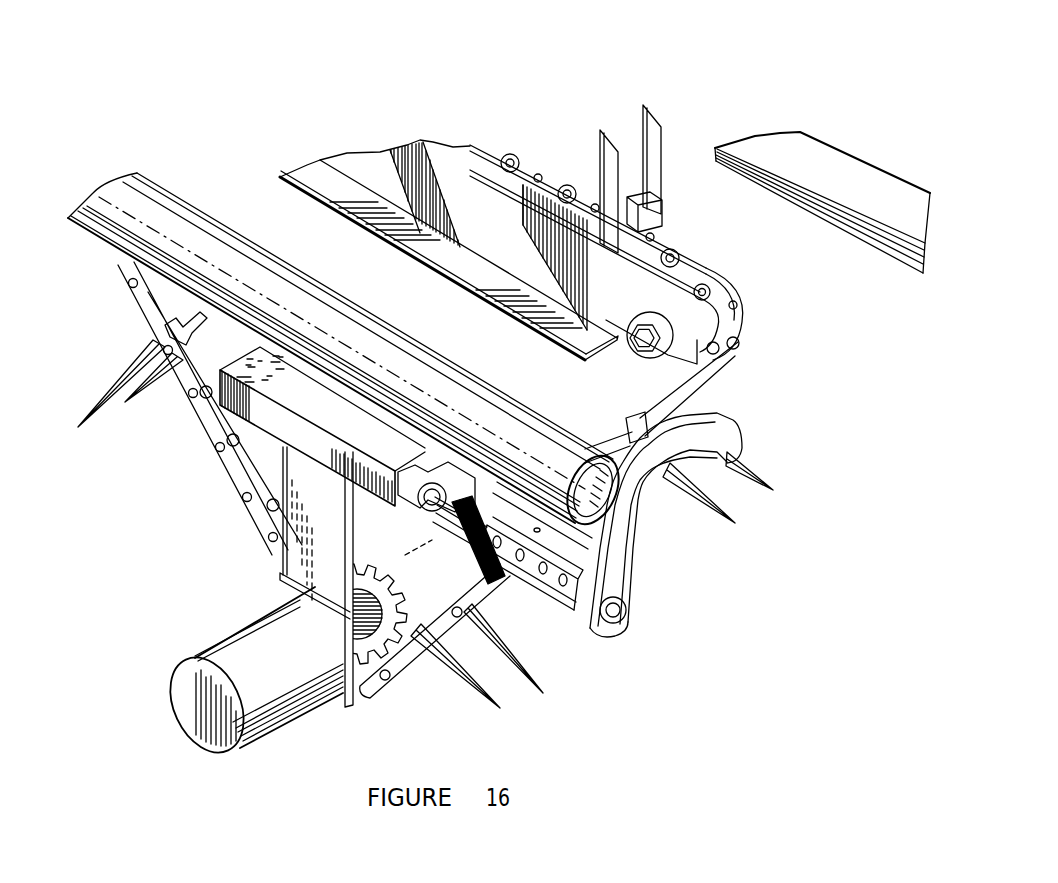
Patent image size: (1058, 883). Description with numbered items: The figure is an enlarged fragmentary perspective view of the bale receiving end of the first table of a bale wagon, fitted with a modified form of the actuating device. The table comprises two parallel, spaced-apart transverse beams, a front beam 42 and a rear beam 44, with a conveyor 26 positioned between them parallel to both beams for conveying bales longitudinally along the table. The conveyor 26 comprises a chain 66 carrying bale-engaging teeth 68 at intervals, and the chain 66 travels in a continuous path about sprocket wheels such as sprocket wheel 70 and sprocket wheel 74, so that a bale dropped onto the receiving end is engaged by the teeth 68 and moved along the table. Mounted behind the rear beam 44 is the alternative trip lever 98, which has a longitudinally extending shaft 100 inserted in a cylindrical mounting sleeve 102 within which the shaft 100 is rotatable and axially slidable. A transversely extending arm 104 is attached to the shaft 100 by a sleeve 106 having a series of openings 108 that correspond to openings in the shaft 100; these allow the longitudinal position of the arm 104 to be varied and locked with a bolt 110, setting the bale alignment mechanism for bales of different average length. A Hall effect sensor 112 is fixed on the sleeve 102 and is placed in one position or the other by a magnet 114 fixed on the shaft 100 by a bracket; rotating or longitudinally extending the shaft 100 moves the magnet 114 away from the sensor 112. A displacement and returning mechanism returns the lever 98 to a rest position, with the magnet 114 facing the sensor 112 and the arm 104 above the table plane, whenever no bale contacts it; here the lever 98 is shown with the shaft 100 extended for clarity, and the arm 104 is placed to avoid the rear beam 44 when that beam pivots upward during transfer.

The conveyor 26 is at (752, 337).
The front beam 42 is at (853, 233).
The rear beam 44 is at (210, 217).
The chain 66 is at (715, 262).
The bale-engaging teeth 68 is at (637, 118).
The sprocket wheel 70 is at (700, 356).
The sprocket wheel 74 is at (385, 620).
The trip lever 98 is at (618, 628).
The shaft 100 is at (485, 520).
The mounting sleeve 102 is at (440, 488).
The arm 104 is at (640, 513).
The sleeve 106 is at (553, 570).
The openings 108 is at (540, 580).
The bolt 110 is at (563, 607).
The Hall effect sensor 112 is at (415, 533).
The magnet 114 is at (446, 546).